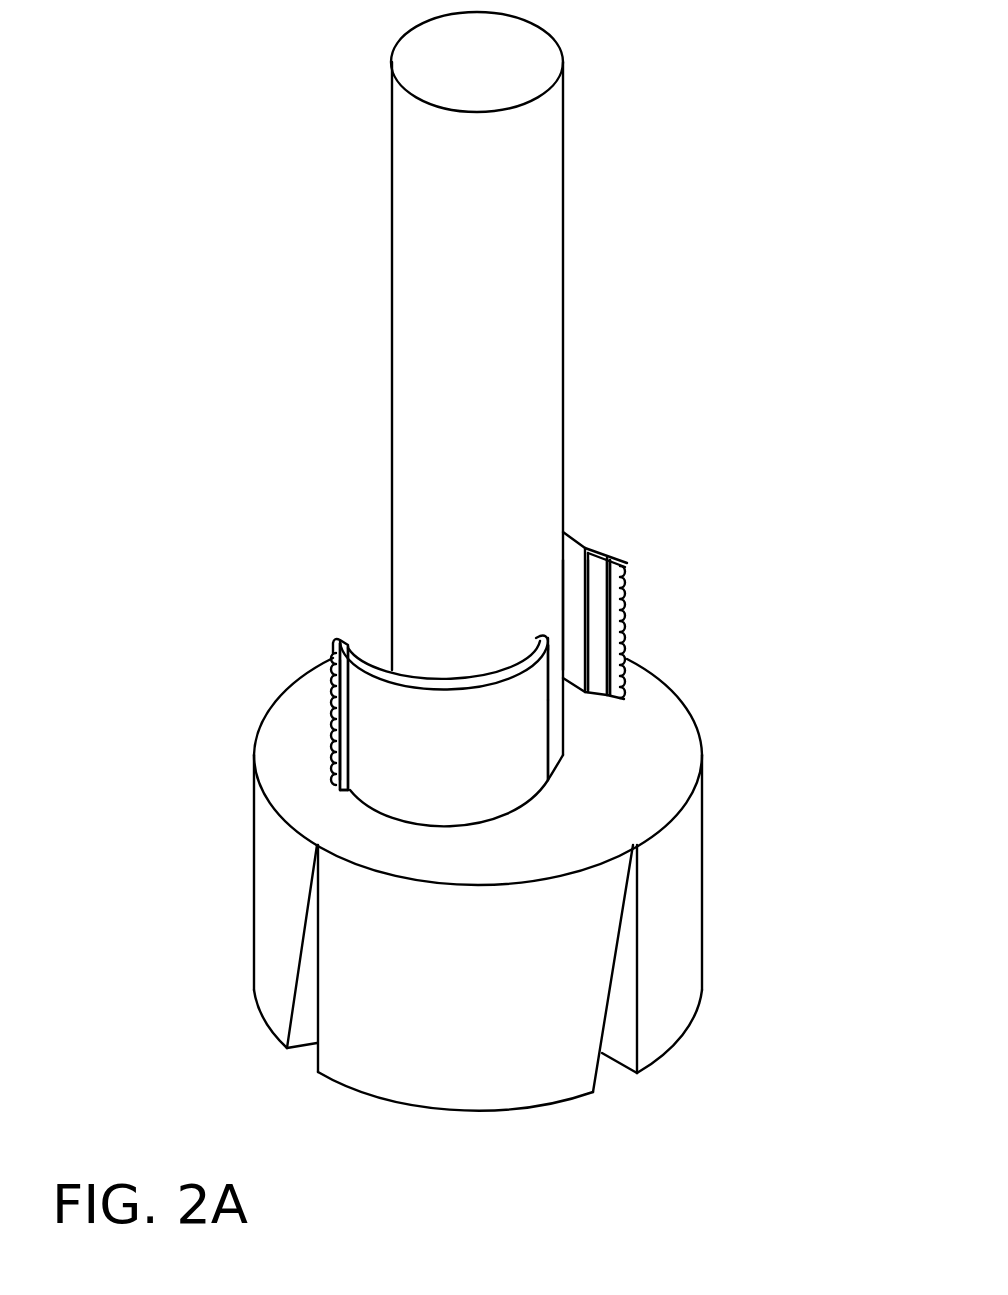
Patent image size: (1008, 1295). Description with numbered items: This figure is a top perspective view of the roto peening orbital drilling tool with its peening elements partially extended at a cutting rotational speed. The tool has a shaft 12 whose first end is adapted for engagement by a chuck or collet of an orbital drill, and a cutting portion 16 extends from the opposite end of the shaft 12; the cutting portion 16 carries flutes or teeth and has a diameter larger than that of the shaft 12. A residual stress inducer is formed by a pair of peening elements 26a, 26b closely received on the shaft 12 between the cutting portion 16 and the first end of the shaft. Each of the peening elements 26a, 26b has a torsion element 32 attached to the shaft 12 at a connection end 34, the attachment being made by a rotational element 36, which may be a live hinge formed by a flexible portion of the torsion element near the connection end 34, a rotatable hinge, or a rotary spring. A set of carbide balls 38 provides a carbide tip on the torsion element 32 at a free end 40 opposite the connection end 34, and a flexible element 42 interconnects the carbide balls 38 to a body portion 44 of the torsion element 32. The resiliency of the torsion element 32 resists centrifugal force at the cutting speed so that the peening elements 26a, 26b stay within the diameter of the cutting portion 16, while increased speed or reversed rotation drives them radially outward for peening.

The shaft 12 is at (510, 238).
The cutting portion 16 is at (680, 907).
The peening element 26a is at (598, 542).
The peening element 26b is at (403, 677).
The torsion element 32 is at (445, 748).
The connection end 34 is at (540, 728).
The rotational element 36 is at (545, 636).
The carbide balls 38 is at (333, 650).
The free end 40 is at (340, 740).
The flexible element 42 is at (340, 705).
The body portion 44 is at (378, 732).